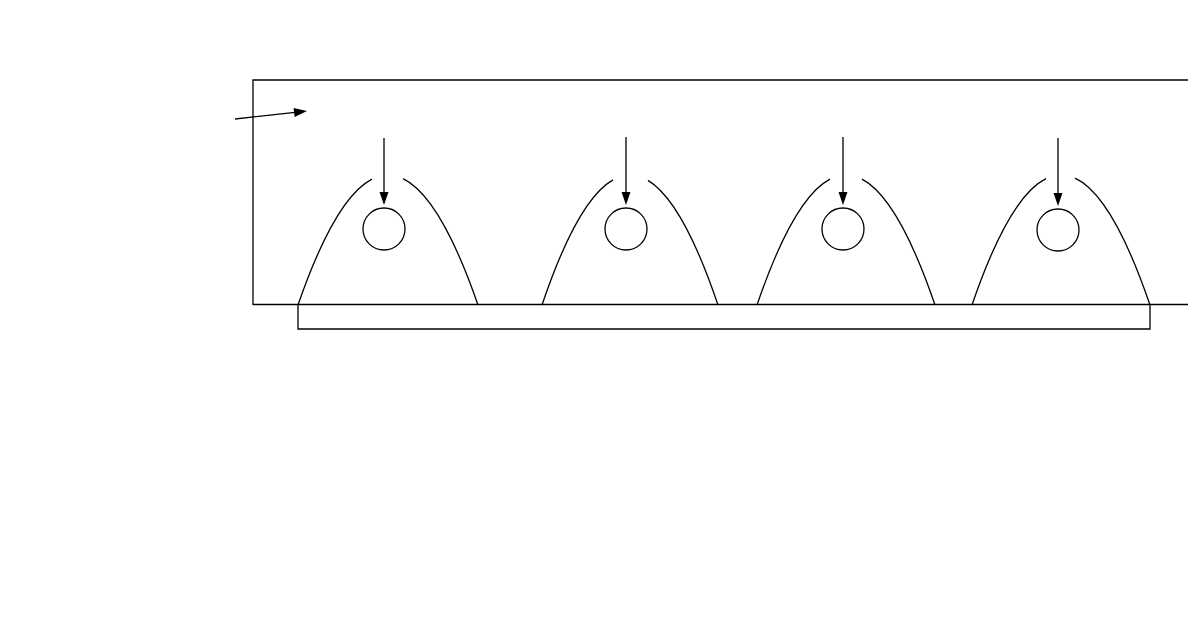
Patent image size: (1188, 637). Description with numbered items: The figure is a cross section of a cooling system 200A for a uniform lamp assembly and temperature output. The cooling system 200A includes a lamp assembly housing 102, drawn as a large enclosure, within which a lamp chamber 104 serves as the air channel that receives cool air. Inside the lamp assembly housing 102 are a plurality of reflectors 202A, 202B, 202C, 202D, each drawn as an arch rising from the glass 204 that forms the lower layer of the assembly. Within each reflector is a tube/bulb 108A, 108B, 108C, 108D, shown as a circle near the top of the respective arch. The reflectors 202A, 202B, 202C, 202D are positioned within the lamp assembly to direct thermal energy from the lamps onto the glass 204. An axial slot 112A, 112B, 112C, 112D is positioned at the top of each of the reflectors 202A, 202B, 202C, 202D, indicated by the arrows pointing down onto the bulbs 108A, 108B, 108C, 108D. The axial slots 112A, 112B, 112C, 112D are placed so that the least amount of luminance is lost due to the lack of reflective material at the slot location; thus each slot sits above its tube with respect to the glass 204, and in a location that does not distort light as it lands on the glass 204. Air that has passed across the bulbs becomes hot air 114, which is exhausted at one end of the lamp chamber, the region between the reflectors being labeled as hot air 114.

The lamp assembly housing 102 is at (313, 79).
The lamp chamber 104 is at (247, 118).
The tube/bulb 108A is at (399, 208).
The tube/bulb 108B is at (644, 208).
The tube/bulb 108C is at (857, 208).
The tube/bulb 108D is at (1082, 182).
The axial slot 112A is at (417, 135).
The axial slot 112B is at (659, 132).
The axial slot 112C is at (874, 132).
The axial slot 112D is at (1091, 134).
The hot air 114 is at (807, 270).
The cooling system 200A is at (780, 448).
The reflector 202A is at (355, 190).
The reflector 202B is at (578, 207).
The reflector 202C is at (791, 215).
The reflector 202D is at (1013, 203).
The glass 204 is at (678, 330).